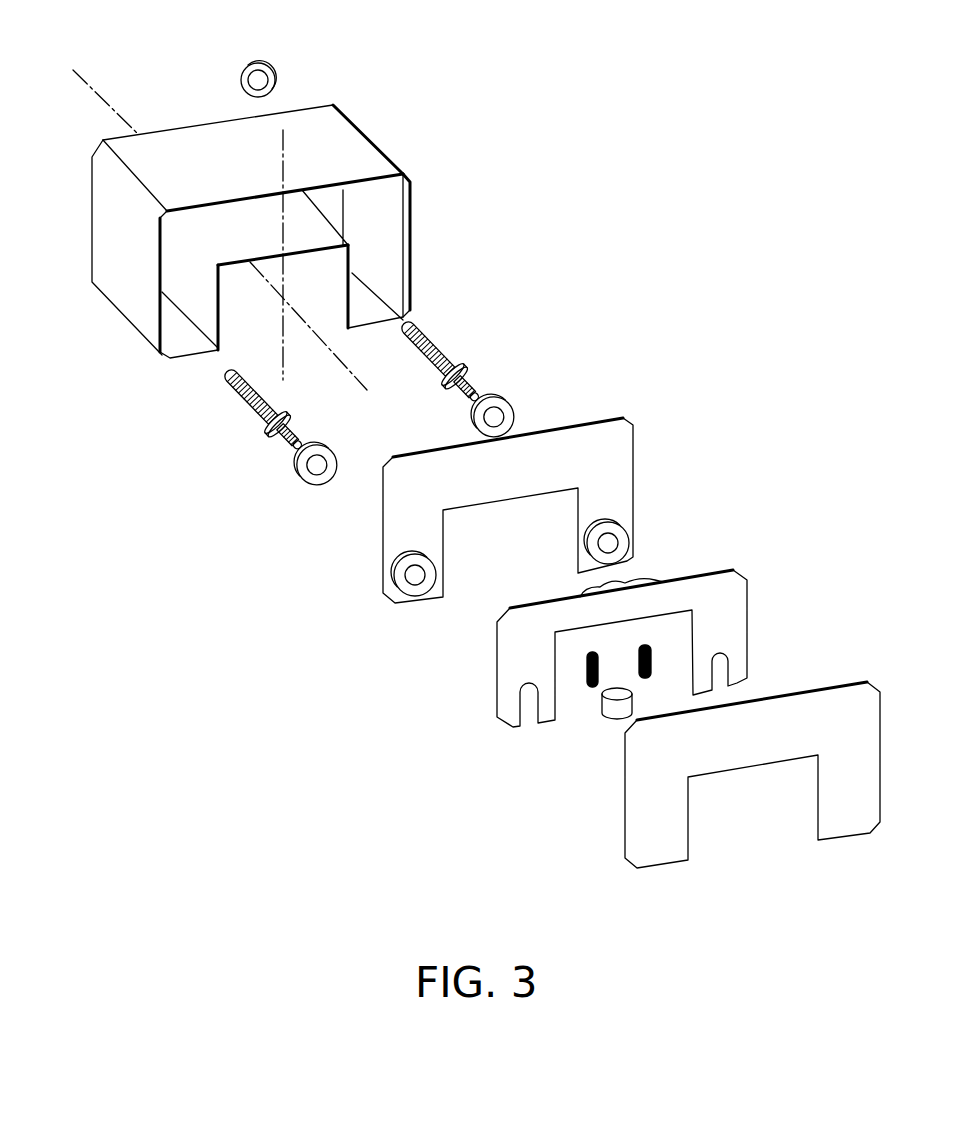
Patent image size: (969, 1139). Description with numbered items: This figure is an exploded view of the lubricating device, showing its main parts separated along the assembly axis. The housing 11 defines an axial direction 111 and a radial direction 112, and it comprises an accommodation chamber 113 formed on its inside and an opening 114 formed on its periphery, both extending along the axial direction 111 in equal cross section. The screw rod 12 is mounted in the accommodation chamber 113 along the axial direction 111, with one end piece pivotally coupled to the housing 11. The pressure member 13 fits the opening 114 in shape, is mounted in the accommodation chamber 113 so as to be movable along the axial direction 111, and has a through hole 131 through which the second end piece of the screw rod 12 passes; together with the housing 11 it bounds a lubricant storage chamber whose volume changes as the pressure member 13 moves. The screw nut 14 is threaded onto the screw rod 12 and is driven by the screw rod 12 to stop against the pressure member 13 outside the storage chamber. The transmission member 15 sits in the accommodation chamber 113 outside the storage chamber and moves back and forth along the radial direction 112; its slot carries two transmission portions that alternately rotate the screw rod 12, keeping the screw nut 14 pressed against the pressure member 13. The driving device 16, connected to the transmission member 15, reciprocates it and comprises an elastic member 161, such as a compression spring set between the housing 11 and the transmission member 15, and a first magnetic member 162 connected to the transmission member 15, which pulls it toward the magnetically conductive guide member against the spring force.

The housing 11 is at (355, 125).
The axial direction 111 is at (352, 373).
The radial direction 112 is at (283, 152).
The accommodation chamber 113 is at (313, 220).
The opening 114 is at (410, 242).
The screw rod 12 is at (437, 340).
The screw nut 14 is at (467, 368).
The pressure member 13 is at (623, 418).
The through hole 131 is at (617, 542).
The transmission member 15 is at (733, 570).
The elastic member 161 is at (650, 655).
The first magnetic member 162 is at (637, 700).
The driving device 16 is at (602, 723).